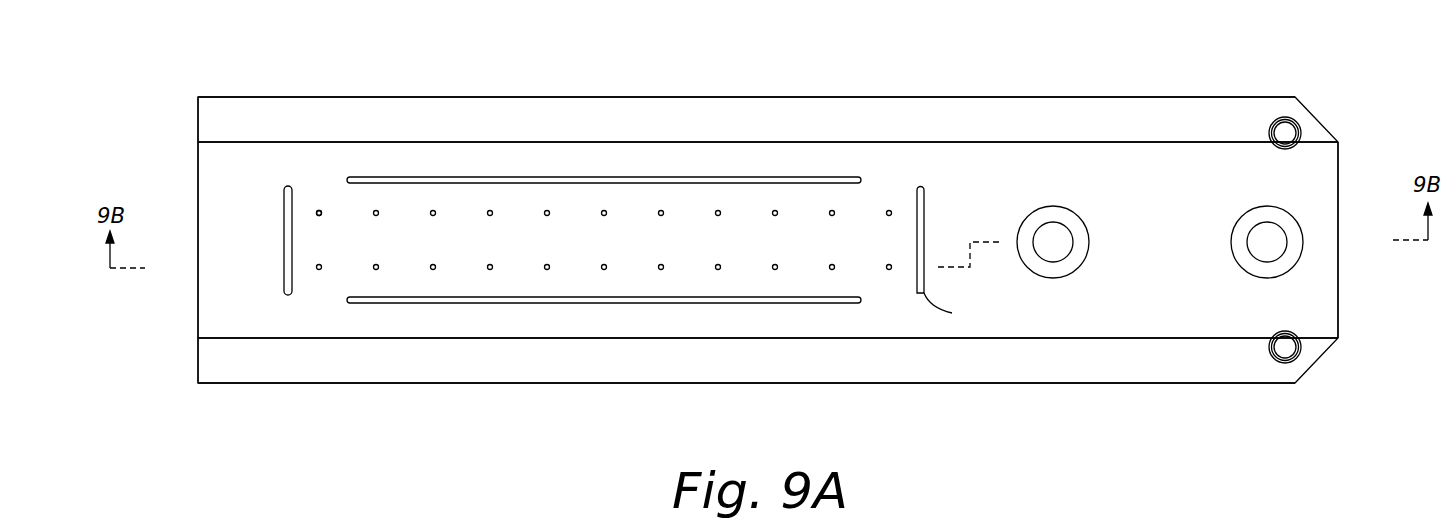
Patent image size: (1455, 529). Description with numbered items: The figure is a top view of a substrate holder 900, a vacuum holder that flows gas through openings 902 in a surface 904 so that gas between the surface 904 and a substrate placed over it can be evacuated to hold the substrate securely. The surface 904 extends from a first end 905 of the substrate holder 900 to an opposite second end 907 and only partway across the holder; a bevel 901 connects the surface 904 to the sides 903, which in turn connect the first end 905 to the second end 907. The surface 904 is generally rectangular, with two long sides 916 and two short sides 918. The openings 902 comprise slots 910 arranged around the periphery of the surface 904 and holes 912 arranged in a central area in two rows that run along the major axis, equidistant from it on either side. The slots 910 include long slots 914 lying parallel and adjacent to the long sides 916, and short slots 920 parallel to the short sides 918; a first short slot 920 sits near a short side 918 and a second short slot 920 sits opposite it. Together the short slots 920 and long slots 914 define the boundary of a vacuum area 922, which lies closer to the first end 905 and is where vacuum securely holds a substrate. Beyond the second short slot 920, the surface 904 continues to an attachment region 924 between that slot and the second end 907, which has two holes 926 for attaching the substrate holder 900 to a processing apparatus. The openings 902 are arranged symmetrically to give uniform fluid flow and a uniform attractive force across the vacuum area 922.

The substrate holder 900 is at (1236, 46).
The bevel 901 is at (942, 115).
The openings 902 is at (347, 178).
The sides 903 is at (712, 97).
The surface 904 is at (1173, 253).
The first end 905 is at (176, 321).
The second end 907 is at (1356, 322).
The slots 910 is at (861, 303).
The holes 912 is at (832, 216).
The long slots 914 is at (742, 177).
The long sides 916 is at (569, 142).
The short sides 918 is at (198, 166).
The short slots 920 is at (284, 240).
The vacuum area 922 is at (626, 253).
The attachment region 924 is at (1145, 317).
The holes 926 is at (1265, 241).